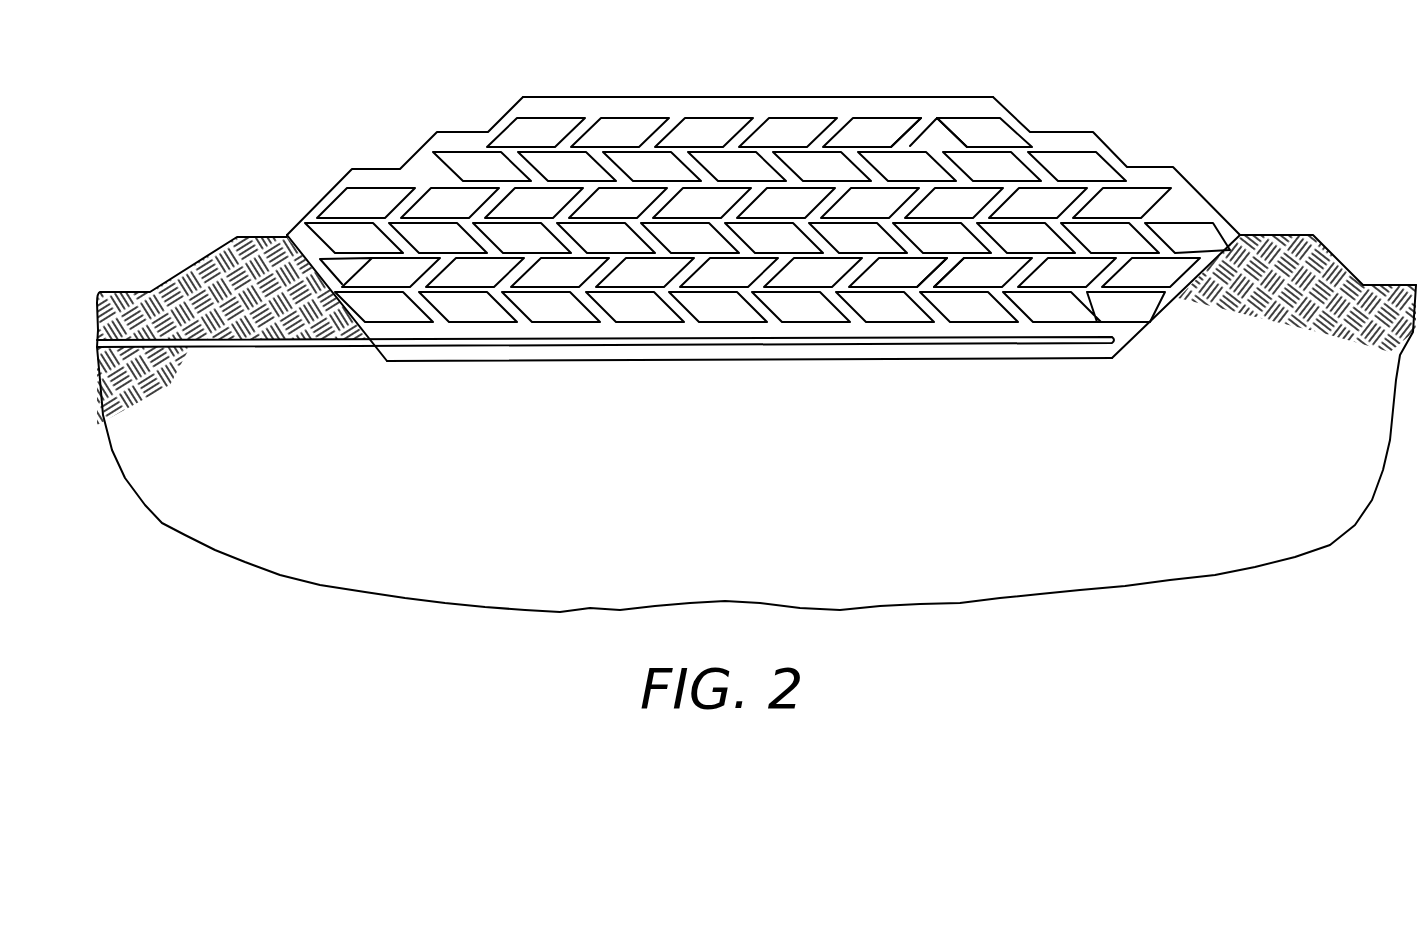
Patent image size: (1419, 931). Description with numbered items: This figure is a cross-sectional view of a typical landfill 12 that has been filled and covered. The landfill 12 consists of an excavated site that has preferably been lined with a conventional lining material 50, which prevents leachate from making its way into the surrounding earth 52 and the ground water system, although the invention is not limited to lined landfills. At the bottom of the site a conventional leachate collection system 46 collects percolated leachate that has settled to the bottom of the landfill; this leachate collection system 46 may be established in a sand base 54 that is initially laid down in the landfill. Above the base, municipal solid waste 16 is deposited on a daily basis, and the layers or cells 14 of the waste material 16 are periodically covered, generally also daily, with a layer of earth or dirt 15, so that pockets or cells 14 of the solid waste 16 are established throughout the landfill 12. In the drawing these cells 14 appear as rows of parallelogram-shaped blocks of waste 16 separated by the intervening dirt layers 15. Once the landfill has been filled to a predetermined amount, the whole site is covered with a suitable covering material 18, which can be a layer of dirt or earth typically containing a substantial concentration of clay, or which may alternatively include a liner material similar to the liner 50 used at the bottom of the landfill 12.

The landfill 12 is at (668, 239).
The cells 14 is at (630, 124).
The layer of earth or dirt 15 is at (850, 152).
The municipal solid waste 16 is at (548, 131).
The covering material 18 is at (766, 108).
The leachate collection system 46 is at (475, 343).
The lining material 50 is at (1077, 358).
The surrounding earth 52 is at (762, 519).
The sand base 54 is at (603, 352).